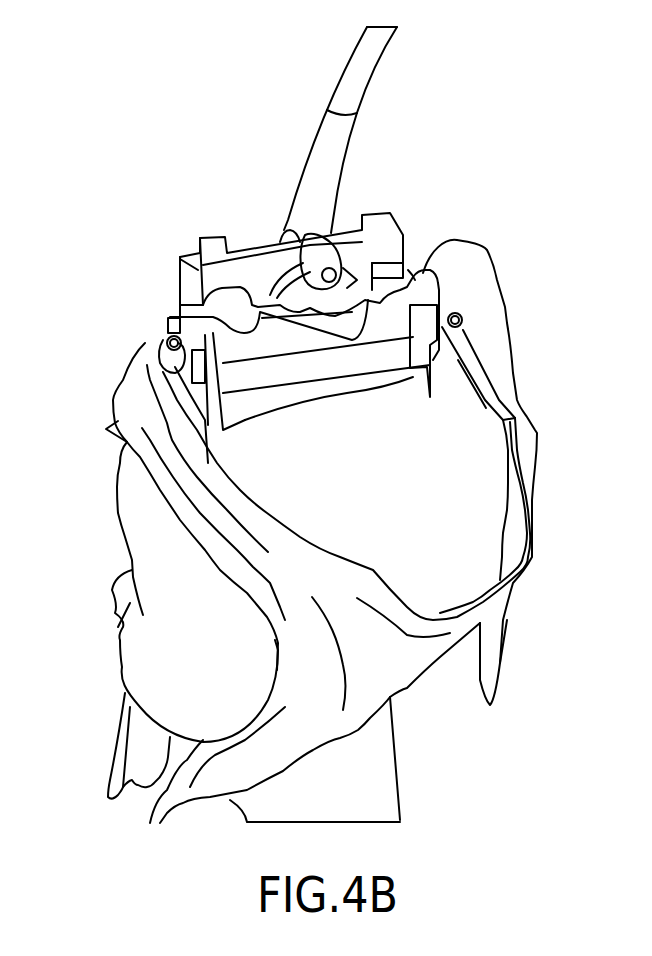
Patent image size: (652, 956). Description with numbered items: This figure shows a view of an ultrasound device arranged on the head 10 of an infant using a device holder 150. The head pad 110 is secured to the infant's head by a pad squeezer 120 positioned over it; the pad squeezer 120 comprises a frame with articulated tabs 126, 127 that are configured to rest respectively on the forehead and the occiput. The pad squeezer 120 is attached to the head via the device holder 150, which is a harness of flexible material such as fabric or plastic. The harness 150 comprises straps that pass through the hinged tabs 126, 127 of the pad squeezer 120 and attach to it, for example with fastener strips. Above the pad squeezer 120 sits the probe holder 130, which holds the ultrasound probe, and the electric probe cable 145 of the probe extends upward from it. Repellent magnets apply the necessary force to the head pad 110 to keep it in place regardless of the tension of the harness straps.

The head 10 is at (532, 557).
The head pad 110 is at (415, 377).
The pad squeezer 120 is at (440, 275).
The articulated tab 126 is at (177, 367).
The articulated tab 127 is at (463, 333).
The probe holder 130 is at (393, 220).
The electric probe cable 145 is at (327, 132).
The device holder 150 is at (392, 675).